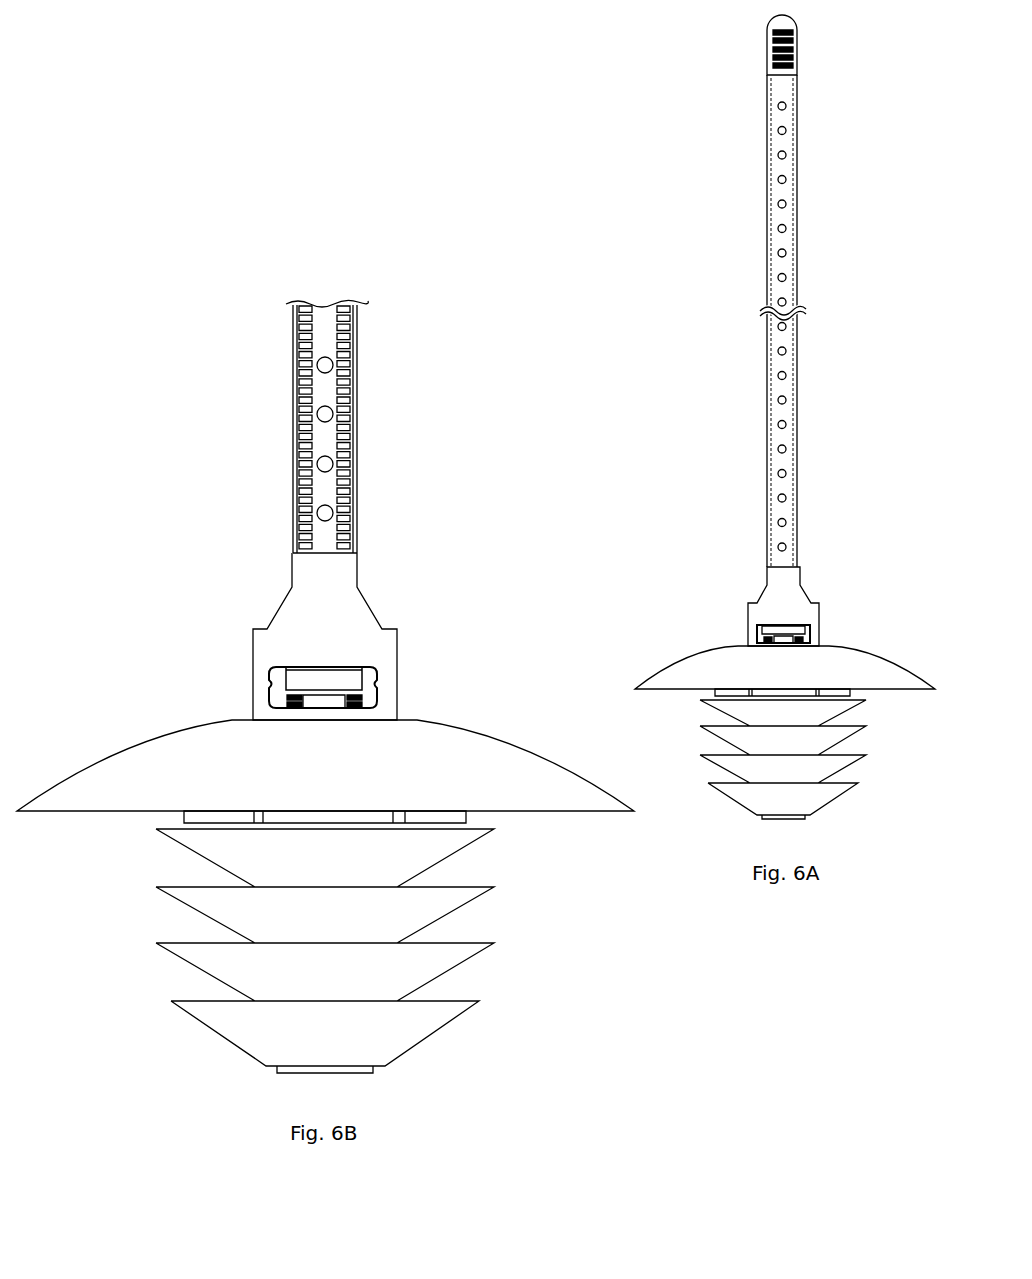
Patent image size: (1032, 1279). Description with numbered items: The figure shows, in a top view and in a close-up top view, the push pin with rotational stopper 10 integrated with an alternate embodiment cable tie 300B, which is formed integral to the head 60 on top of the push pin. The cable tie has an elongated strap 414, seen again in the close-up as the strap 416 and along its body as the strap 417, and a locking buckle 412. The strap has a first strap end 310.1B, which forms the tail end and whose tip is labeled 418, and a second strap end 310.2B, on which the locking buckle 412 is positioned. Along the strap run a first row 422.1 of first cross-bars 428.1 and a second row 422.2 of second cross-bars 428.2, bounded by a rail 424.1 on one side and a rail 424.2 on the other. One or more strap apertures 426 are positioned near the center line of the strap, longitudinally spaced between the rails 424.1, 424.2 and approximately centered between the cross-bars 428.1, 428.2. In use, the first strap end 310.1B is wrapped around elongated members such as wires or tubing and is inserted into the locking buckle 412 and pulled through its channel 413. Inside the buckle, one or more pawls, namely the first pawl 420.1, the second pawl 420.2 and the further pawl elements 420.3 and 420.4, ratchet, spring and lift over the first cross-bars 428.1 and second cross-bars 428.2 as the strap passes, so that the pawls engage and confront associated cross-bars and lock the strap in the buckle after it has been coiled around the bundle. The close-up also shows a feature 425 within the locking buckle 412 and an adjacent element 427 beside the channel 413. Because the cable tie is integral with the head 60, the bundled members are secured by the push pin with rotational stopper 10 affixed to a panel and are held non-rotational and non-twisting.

In FIG. 6A, the push pin with rotational stopper 10 is at (709, 809).
In FIG. 6B, the push pin with rotational stopper 10 is at (325, 896).
In FIG. 6A, the head 60 is at (744, 599).
In FIG. 6A, the hanger assembly 300B is at (770, 192).
In FIG. 6A, the first strap end 310.1B is at (722, 28).
In FIG. 6A, the second strap end 310.2B is at (744, 534).
In FIG. 6B, the locking buckle 412 is at (238, 635).
In FIG. 6B, the channel 413 is at (327, 705).
In FIG. 6A, the strap 414 is at (800, 257).
In FIG. 6B, the strap 416 is at (361, 434).
In FIG. 6A, the strap body 417 is at (789, 385).
In FIG. 6A, the strap head 418 is at (751, 58).
In FIG. 6B, the first pawl 420.1 is at (288, 695).
In FIG. 6B, the second pawl 420.2 is at (288, 705).
In FIG. 6B, the pawl 420.3 is at (357, 700).
In FIG. 6B, the pawl 420.4 is at (360, 707).
In FIG. 6A, the first row 422.1 is at (795, 432).
In FIG. 6A, the second row 422.2 is at (776, 445).
In FIG. 6A, the rail 424.1 is at (797, 128).
In FIG. 6B, the rail 424.1 is at (353, 542).
In FIG. 6A, the rail 424.2 is at (767, 128).
In FIG. 6B, the rail 424.2 is at (297, 533).
In FIG. 6B, the bracket 425 is at (337, 667).
In FIG. 6A, the strap aperture 426 is at (786, 179).
In FIG. 6B, the strap aperture 426 is at (326, 513).
In FIG. 6B, the circuit board 427 is at (353, 675).
In FIG. 6B, the first cross-bars 428.1 is at (342, 368).
In FIG. 6B, the second cross-bars 428.2 is at (310, 365).